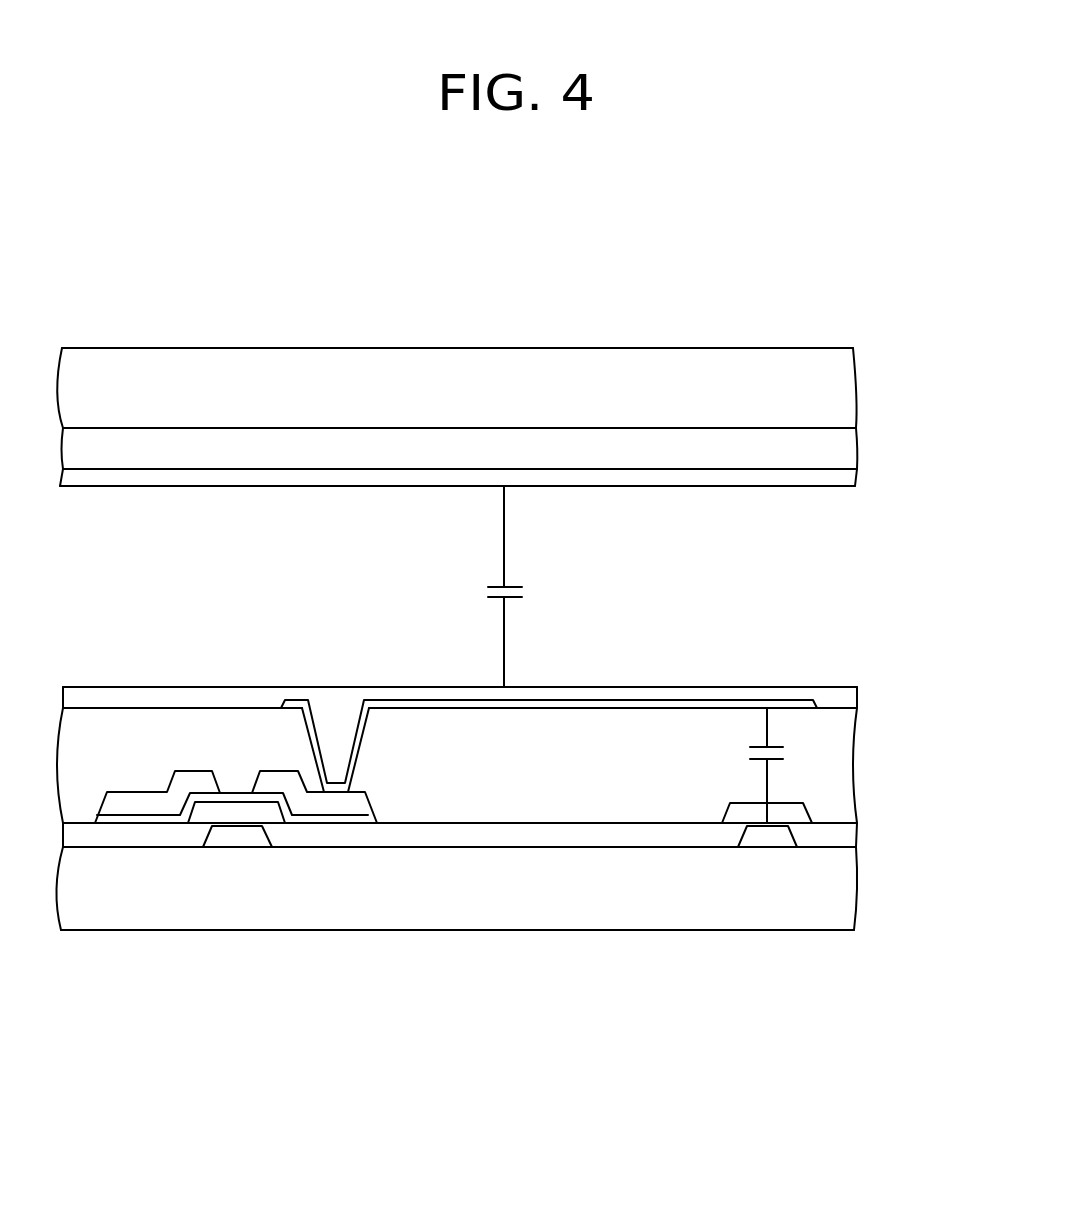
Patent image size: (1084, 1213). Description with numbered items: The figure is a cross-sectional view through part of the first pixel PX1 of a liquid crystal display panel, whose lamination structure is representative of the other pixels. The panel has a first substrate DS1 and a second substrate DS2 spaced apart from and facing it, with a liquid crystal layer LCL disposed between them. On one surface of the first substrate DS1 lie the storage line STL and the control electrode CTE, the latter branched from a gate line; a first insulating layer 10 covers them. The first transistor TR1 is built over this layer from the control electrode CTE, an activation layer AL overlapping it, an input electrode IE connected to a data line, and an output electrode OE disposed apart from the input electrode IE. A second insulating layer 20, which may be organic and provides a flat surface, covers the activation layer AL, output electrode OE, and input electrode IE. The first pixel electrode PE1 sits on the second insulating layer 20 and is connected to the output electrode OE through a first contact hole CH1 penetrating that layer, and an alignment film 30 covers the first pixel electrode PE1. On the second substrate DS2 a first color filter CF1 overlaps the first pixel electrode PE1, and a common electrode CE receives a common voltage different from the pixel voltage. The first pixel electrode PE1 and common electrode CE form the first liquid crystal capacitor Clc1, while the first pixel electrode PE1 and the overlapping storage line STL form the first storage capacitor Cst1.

The first pixel PX1 is at (795, 280).
The second substrate DS2 is at (840, 386).
The first color filter CF1 is at (843, 447).
The common electrode CE is at (843, 478).
The first liquid crystal capacitor Clc1 is at (533, 586).
The liquid crystal layer LCL is at (822, 584).
The first contact hole CH1 is at (358, 748).
The first pixel electrode PE1 is at (652, 705).
The alignment film 30 is at (842, 696).
The second insulating layer 20 is at (838, 765).
The first storage capacitor Cst1 is at (753, 765).
The first insulating layer 10 is at (843, 834).
The storage line STL is at (773, 838).
The first substrate DS1 is at (840, 894).
The input electrode IE is at (163, 802).
The control electrode CTE is at (236, 836).
The activation layer AL is at (300, 817).
The output electrode OE is at (342, 803).
The first transistor TR1 is at (368, 1008).